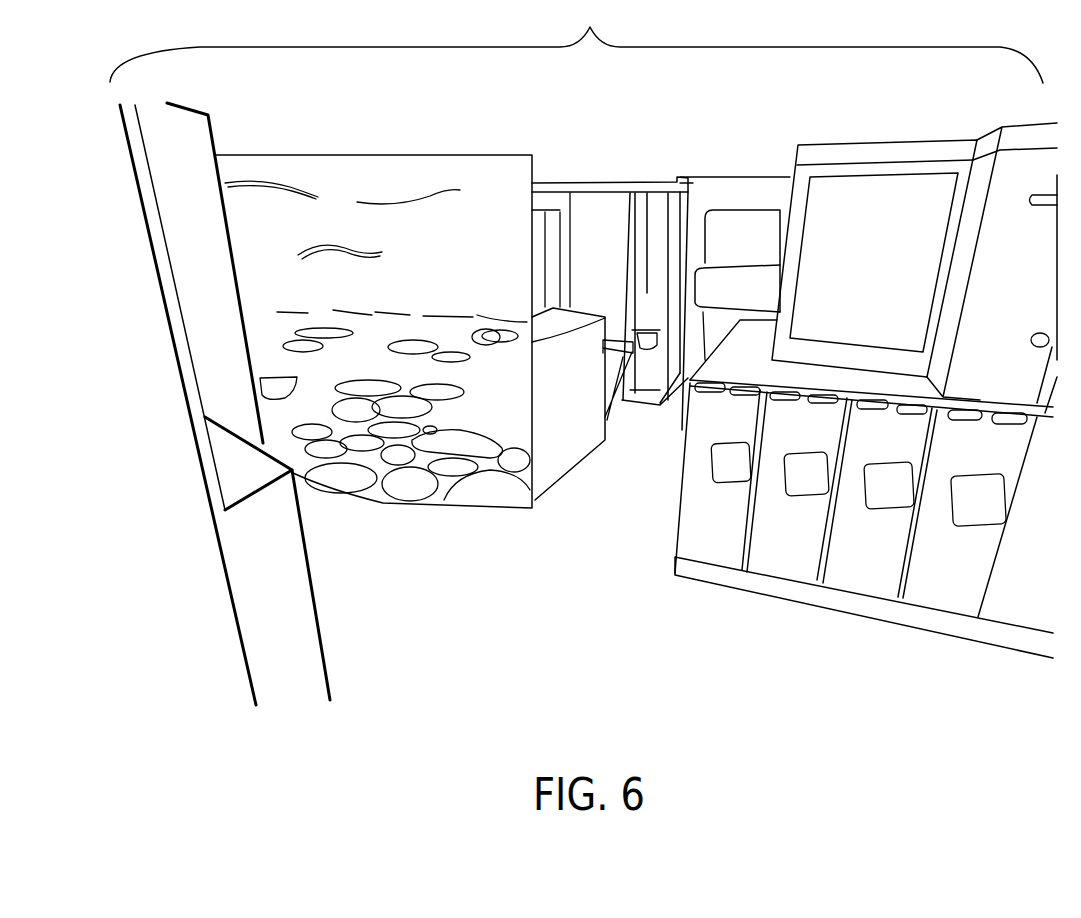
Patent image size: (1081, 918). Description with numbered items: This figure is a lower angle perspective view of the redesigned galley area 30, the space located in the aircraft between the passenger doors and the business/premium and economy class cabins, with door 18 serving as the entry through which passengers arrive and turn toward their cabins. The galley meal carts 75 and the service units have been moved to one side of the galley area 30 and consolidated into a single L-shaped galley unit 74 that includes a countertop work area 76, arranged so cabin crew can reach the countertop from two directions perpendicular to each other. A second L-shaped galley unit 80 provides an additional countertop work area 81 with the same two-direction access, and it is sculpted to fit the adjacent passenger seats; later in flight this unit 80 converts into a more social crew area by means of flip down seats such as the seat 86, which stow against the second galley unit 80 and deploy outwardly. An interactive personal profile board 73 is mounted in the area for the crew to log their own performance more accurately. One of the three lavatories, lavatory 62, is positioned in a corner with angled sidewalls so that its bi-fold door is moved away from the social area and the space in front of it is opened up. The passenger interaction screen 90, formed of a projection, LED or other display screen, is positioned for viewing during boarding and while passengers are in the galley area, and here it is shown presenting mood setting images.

The galley area 30 is at (576, 41).
The passenger interaction screen 90 is at (397, 178).
The second L-shaped galley unit 80 is at (543, 202).
The flip down seat 86 is at (620, 337).
The lavatory 62 is at (633, 340).
The countertop work area 81 is at (547, 328).
The door 18 is at (735, 222).
The interactive personal profile board 73 is at (898, 193).
The L-shaped galley unit 74 is at (1035, 163).
The galley meal carts 75 is at (713, 540).
The countertop work area 76 is at (770, 383).